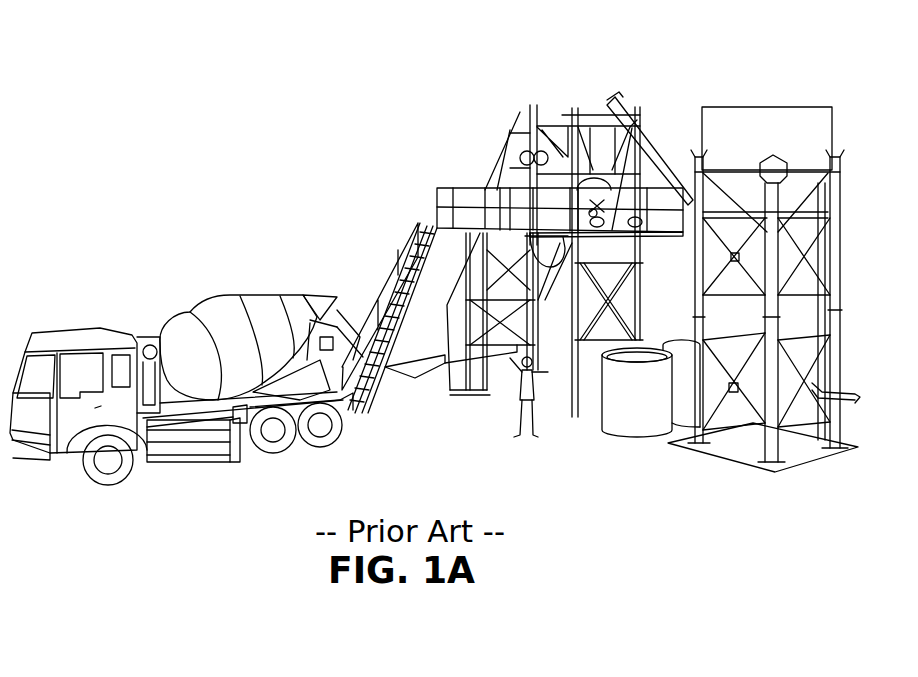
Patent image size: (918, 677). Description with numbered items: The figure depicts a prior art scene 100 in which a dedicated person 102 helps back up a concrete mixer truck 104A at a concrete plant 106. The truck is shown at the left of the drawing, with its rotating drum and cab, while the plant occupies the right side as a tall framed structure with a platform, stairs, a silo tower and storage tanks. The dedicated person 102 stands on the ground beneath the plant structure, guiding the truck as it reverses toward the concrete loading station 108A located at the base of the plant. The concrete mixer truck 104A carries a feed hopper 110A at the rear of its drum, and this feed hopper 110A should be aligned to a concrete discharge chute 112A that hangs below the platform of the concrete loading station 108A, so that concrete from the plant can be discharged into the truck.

The scene 100 is at (171, 100).
The dedicated person 102 is at (547, 403).
The concrete mixer truck 104A is at (124, 299).
The concrete plant 106 is at (842, 95).
The concrete loading station 108A is at (448, 404).
The feed hopper 110A is at (317, 297).
The concrete discharge chute 112A is at (553, 268).